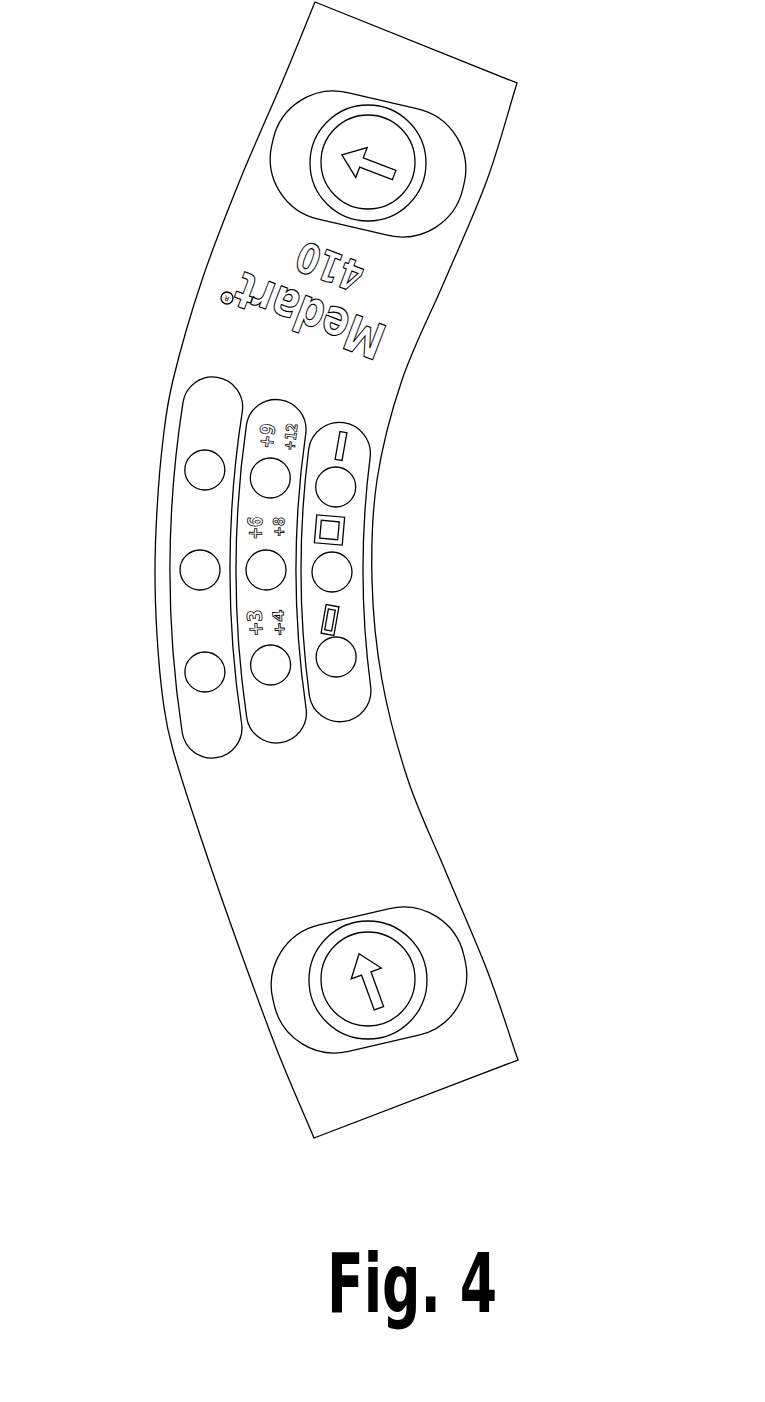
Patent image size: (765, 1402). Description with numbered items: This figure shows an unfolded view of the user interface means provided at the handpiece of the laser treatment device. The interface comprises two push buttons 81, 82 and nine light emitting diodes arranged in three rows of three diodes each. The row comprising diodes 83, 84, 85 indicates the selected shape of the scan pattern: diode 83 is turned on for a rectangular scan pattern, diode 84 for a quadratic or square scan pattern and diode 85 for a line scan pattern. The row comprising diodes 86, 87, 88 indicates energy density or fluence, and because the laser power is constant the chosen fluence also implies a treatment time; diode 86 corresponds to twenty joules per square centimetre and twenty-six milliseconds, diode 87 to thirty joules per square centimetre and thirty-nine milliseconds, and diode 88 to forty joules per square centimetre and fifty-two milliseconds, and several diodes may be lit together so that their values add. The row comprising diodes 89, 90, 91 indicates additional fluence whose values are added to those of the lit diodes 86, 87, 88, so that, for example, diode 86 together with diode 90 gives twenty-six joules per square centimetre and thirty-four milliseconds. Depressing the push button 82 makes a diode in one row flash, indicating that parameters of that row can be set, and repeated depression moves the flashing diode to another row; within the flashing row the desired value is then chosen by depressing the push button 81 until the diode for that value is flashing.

The push button 81 is at (420, 957).
The push button 82 is at (423, 192).
The diode 83 is at (356, 657).
The diode 84 is at (352, 570).
The diode 85 is at (355, 486).
The diode 86 is at (187, 670).
The diode 87 is at (180, 577).
The diode 88 is at (187, 473).
The diode 89 is at (267, 686).
The diode 90 is at (242, 477).
The diode 91 is at (293, 592).